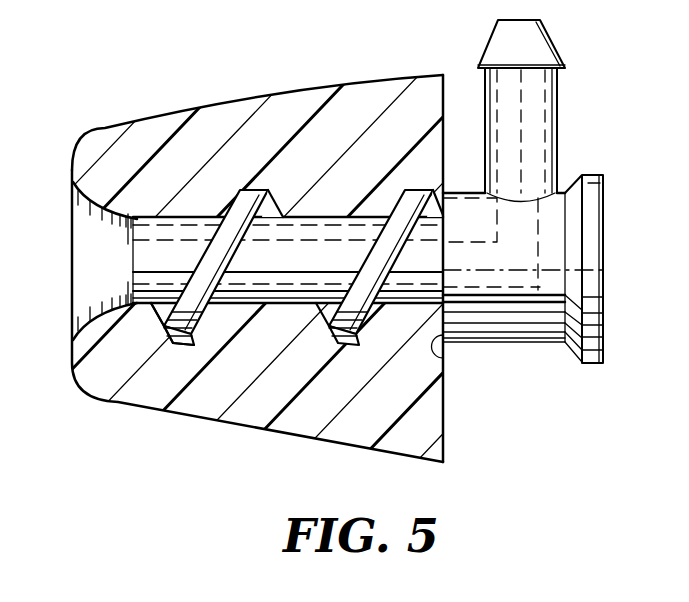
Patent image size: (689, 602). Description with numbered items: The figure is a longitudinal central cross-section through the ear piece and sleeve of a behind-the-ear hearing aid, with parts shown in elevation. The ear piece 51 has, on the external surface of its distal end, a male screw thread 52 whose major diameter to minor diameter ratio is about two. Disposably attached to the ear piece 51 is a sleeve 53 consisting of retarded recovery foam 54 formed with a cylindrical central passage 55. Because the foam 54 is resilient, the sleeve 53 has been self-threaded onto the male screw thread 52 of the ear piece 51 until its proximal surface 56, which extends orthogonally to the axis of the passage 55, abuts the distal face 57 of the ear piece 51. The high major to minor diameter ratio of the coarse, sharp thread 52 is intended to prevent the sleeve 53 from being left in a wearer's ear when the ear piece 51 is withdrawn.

The ear piece 51 is at (551, 342).
The male screw thread 52 is at (406, 188).
The sleeve 53 is at (311, 86).
The retarded recovery foam 54 is at (224, 122).
The cylindrical central passage 55 is at (150, 305).
The proximal surface 56 is at (443, 412).
The distal face 57 is at (444, 359).